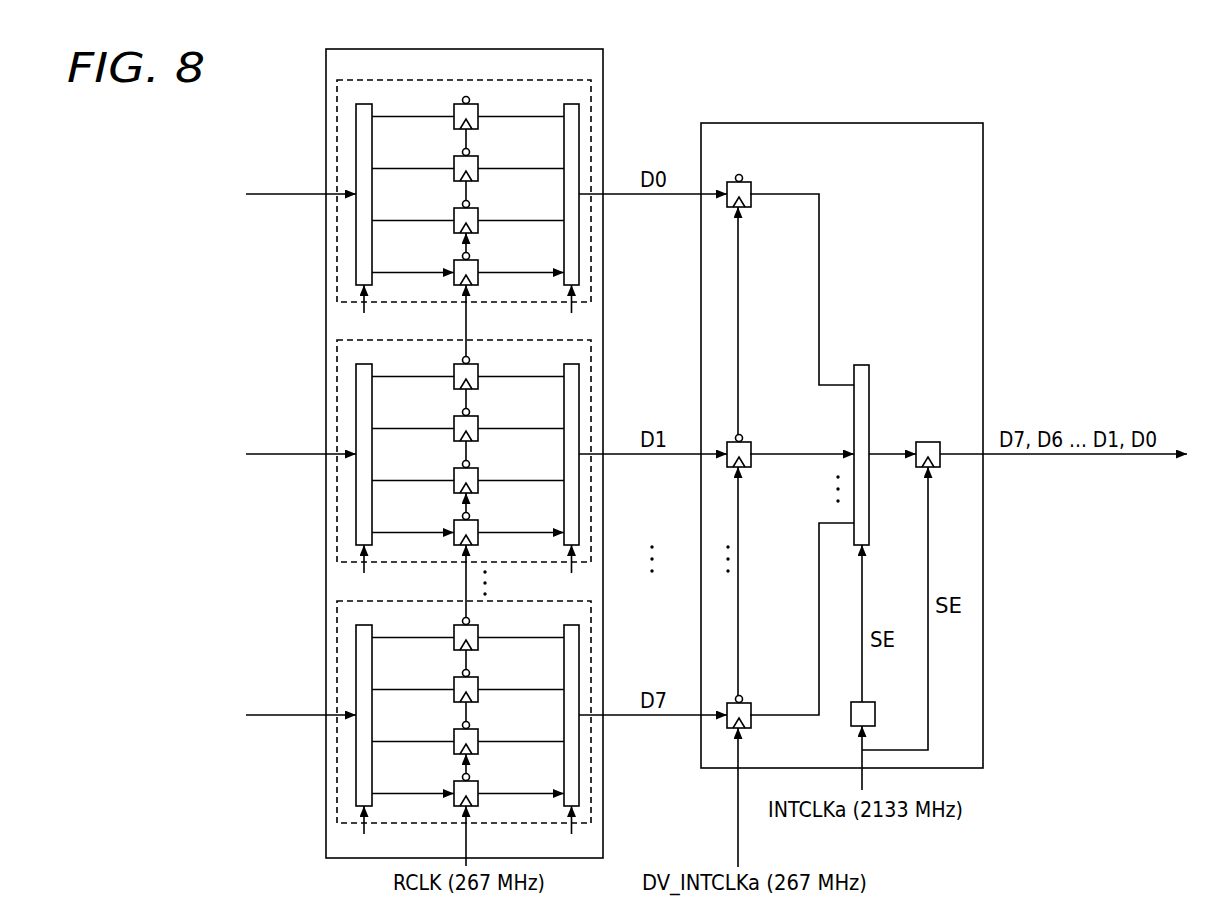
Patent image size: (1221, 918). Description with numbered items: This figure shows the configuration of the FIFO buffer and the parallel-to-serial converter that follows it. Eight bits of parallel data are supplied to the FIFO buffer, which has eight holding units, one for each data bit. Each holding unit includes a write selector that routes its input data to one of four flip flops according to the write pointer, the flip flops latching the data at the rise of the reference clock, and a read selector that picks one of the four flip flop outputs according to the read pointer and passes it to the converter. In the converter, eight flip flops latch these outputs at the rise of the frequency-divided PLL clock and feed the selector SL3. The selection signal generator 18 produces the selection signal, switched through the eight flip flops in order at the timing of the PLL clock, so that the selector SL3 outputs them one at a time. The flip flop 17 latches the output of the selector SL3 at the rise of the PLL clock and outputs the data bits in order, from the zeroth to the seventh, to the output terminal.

The flip flop 17 is at (940, 441).
The selection signal generator 18 is at (875, 700).
The selector SL3 is at (869, 368).